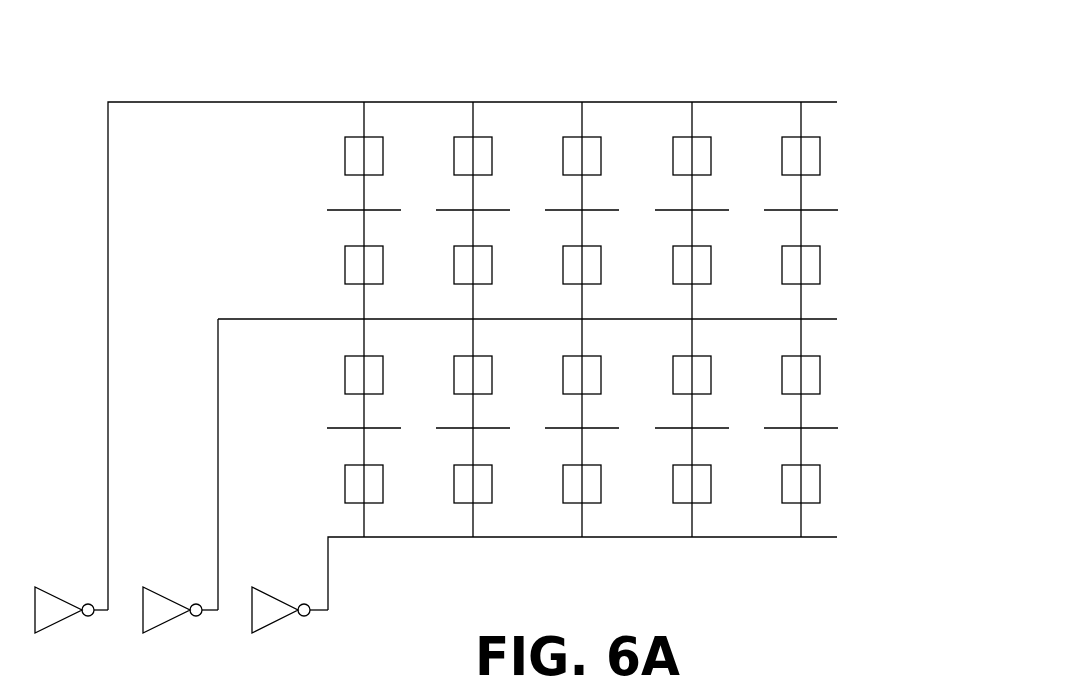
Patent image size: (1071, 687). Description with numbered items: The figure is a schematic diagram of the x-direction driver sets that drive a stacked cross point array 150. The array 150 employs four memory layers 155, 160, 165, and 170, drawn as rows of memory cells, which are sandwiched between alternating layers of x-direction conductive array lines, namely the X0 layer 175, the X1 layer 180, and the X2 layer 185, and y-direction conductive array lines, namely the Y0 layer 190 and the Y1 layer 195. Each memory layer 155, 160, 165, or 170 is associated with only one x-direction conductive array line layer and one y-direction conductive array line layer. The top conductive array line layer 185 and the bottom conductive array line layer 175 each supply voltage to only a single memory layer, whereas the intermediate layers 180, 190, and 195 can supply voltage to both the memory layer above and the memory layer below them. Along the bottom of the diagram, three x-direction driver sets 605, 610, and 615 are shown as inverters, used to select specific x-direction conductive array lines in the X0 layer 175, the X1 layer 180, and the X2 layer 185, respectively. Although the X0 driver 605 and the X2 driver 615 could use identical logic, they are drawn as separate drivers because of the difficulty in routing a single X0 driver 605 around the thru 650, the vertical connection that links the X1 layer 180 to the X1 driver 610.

The stacked cross point array 150 is at (776, 70).
The memory layer 155 is at (842, 479).
The memory layer 160 is at (842, 370).
The memory layer 165 is at (842, 260).
The memory layer 170 is at (842, 151).
The X0 layer of x-direction conductive array lines 175 is at (510, 537).
The X1 layer of x-direction conductive array lines 180 is at (338, 318).
The X2 layer of x-direction conductive array lines 185 is at (338, 101).
The Y0 layer of y-direction conductive array lines 190 is at (308, 420).
The Y1 layer of y-direction conductive array lines 195 is at (308, 202).
The X0 driver 605 is at (268, 595).
The X1 driver 610 is at (178, 595).
The X2 driver 615 is at (62, 597).
The thru 650 is at (218, 428).